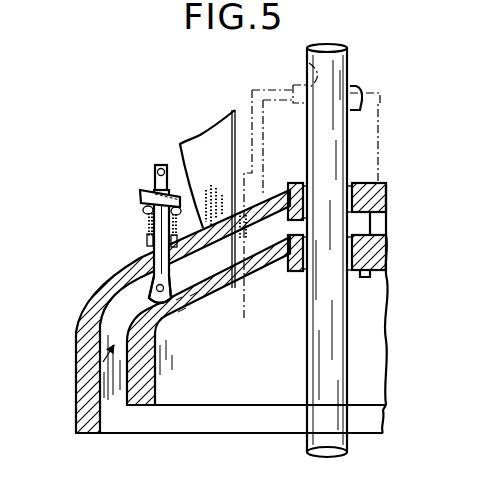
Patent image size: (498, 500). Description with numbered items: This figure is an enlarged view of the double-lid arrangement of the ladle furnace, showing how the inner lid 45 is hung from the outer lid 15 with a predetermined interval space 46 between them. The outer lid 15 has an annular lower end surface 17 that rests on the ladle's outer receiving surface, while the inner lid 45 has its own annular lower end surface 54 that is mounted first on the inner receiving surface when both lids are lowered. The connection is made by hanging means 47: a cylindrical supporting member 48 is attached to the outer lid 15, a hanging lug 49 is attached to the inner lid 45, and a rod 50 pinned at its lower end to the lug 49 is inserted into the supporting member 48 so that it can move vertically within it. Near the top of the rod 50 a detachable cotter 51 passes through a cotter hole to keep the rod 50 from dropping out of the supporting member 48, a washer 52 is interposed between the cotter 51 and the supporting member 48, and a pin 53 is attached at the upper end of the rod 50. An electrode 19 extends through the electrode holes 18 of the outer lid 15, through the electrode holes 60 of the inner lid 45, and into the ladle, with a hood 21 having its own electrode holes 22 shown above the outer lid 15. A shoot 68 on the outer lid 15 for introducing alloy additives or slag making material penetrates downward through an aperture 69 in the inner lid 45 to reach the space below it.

The outer lid 15 is at (92, 320).
The annular lower end surface 17 is at (85, 436).
The electrode holes 18 is at (347, 204).
The electrodes 19 is at (327, 130).
The hood 21 is at (262, 86).
The electrode holes 22 is at (318, 67).
The inner lid 45 is at (146, 374).
The interval space 46 is at (76, 368).
The hanging means 47 is at (114, 193).
The cylindrical supporting member 48 is at (147, 225).
The hanging lug 49 is at (150, 294).
The rod 50 is at (147, 248).
The cotter 51 is at (147, 188).
The washer 52 is at (140, 200).
The pin 53 is at (163, 165).
The annular lower end surface 54 is at (143, 407).
The electrode holes 60 is at (348, 278).
The shoot 68 is at (213, 133).
The aperture 69 is at (249, 290).